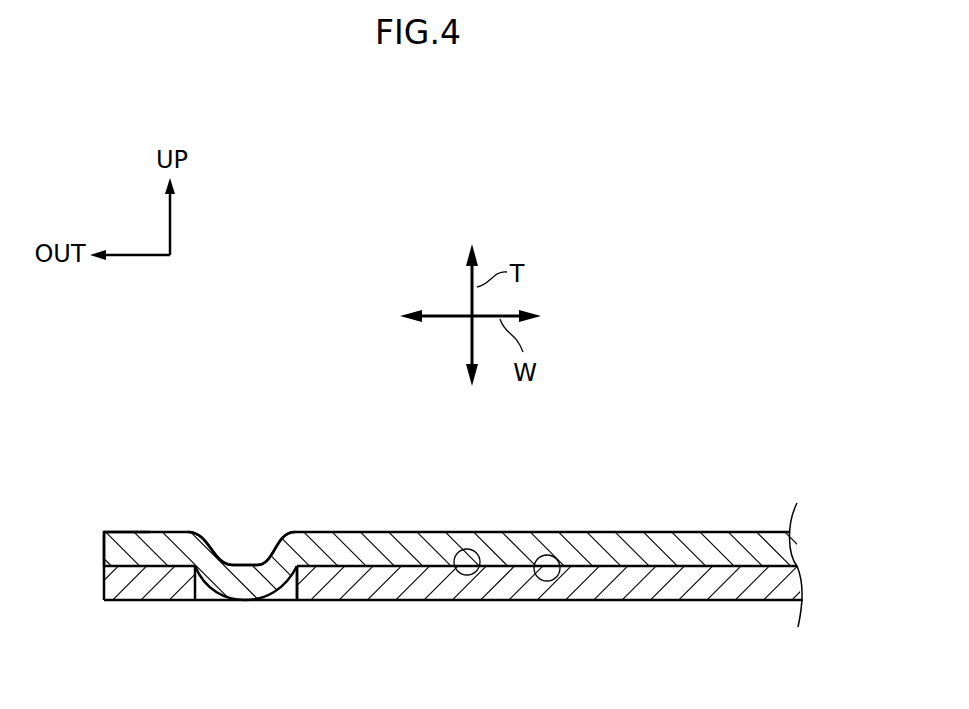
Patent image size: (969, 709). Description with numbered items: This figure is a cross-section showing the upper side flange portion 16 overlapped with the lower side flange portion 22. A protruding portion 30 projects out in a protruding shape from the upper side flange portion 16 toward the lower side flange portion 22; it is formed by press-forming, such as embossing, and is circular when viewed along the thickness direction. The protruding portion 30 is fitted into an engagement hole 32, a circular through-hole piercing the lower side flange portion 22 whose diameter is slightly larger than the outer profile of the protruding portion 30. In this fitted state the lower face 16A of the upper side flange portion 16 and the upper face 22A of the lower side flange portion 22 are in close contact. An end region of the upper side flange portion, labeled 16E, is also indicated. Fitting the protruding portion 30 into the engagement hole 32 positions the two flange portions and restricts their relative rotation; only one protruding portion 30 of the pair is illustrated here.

The upper side flange portion 16 is at (618, 531).
The end portion of upper panel 16E is at (128, 545).
The surface (lower face) of the upper side flange portion 16A is at (535, 566).
The lower side flange portion 22 is at (650, 602).
The surface (upper face) of the lower side flange portion 22A is at (462, 552).
The protruding portion 30 is at (242, 585).
The engagement hole 32 is at (293, 585).